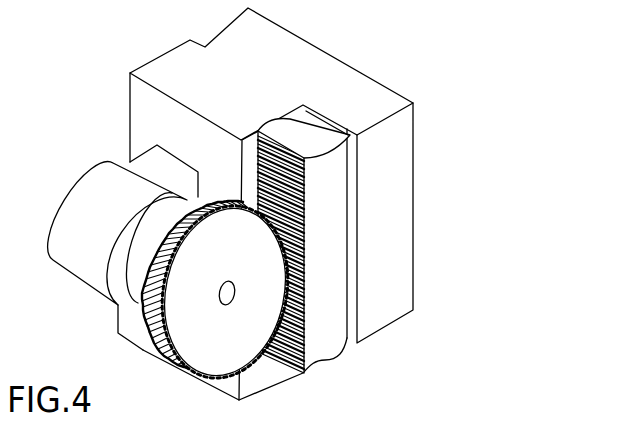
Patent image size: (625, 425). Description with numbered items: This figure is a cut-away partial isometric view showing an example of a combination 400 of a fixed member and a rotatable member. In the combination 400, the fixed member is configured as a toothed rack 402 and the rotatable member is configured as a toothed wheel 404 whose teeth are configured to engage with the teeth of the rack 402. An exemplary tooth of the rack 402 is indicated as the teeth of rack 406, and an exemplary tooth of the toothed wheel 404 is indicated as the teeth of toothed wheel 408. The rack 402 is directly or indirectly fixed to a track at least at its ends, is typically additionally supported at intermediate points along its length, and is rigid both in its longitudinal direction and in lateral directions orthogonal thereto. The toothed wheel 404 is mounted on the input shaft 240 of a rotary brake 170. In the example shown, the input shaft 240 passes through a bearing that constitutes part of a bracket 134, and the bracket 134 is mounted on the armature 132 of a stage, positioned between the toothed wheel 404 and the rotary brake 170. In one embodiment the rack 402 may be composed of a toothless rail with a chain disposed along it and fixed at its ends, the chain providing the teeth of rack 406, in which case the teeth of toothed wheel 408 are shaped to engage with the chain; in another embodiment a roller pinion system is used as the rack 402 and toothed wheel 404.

The armature 132 is at (263, 38).
The bracket 134 is at (137, 278).
The rotary brake 170 is at (95, 183).
The input shaft 240 is at (222, 302).
The combination 400 is at (351, 43).
The toothed rack 402 is at (325, 345).
The toothed wheel 404 is at (205, 306).
The teeth of rack 406 is at (294, 356).
The teeth of toothed wheel 408 is at (147, 340).